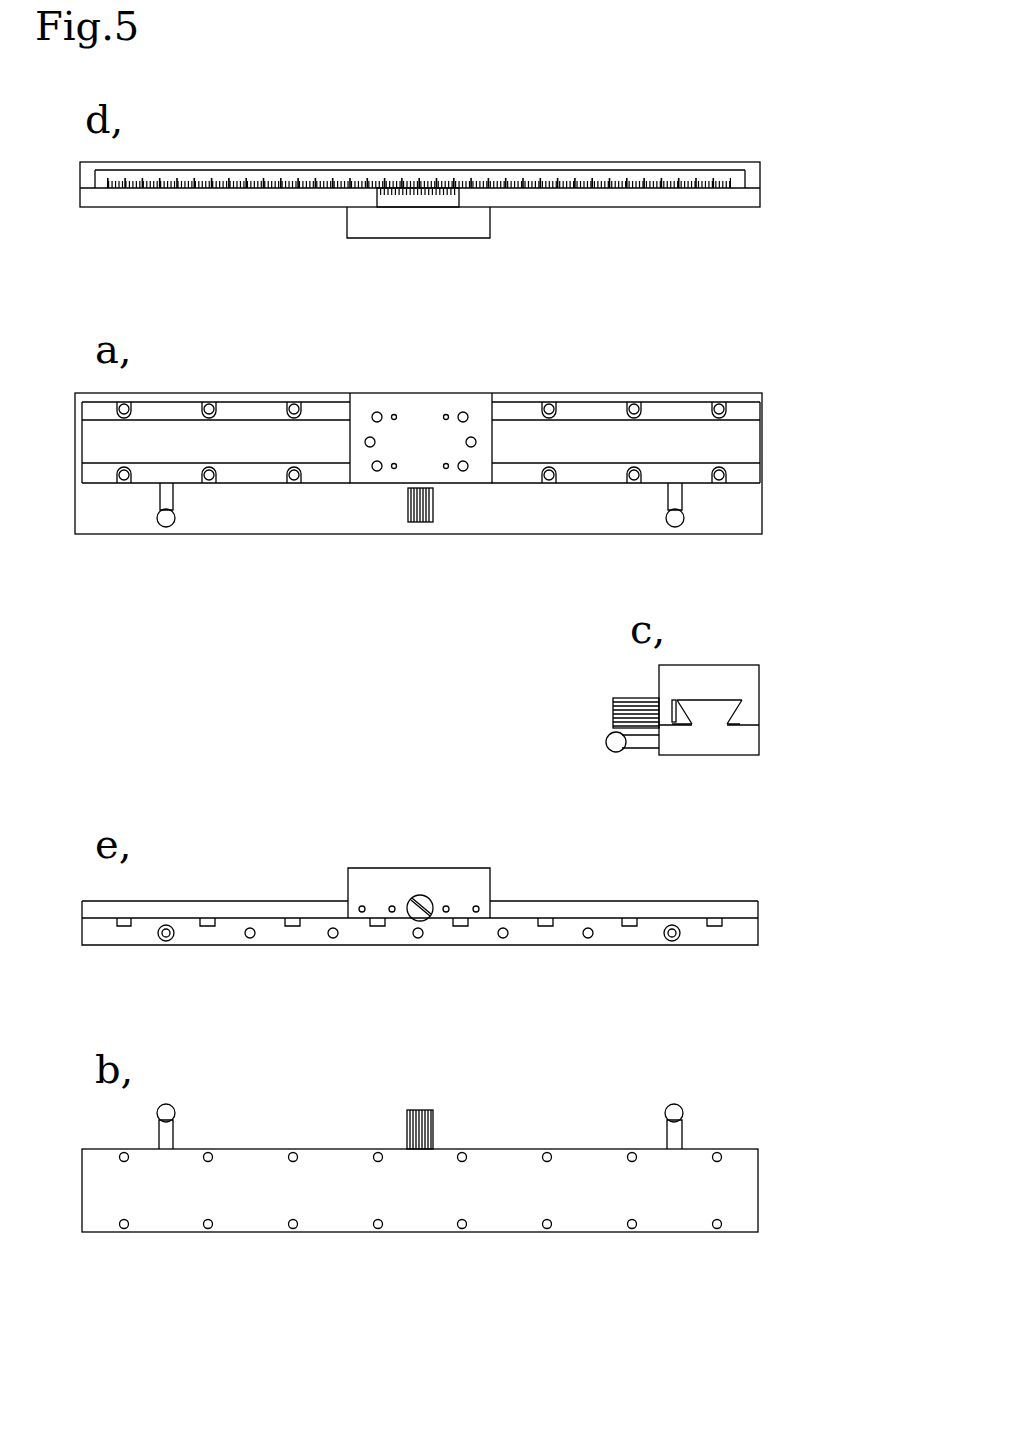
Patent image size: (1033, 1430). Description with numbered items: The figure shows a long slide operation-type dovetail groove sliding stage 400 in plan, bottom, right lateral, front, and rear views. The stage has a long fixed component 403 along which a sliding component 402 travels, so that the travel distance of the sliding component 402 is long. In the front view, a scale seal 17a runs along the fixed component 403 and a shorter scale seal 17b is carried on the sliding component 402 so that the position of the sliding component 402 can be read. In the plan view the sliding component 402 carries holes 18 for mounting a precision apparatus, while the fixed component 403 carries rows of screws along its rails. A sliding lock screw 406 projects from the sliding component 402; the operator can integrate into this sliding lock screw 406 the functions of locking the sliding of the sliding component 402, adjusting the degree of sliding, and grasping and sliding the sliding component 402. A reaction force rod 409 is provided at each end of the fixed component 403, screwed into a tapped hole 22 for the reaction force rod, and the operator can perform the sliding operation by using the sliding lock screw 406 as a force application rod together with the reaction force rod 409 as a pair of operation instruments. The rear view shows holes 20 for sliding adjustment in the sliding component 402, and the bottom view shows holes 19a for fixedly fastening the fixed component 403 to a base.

The fixed component 403 is at (367, 170).
The scale seal 17a is at (563, 173).
The scale seal 17b is at (397, 207).
The sliding component 402 is at (469, 225).
The hole for mounting a precision apparatus 18 is at (380, 411).
The long slide operation-type dovetail groove sliding stage 400 is at (676, 383).
The reaction force rod 409 is at (170, 524).
The sliding lock screw 406 is at (426, 522).
The hole for sliding adjustment 20 is at (360, 906).
The tapped hole for reaction force rod 22 is at (333, 939).
The hole for fixedly fastening to a base 19a is at (548, 1151).